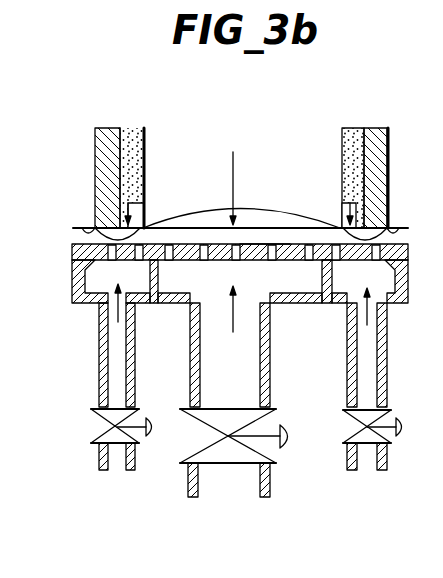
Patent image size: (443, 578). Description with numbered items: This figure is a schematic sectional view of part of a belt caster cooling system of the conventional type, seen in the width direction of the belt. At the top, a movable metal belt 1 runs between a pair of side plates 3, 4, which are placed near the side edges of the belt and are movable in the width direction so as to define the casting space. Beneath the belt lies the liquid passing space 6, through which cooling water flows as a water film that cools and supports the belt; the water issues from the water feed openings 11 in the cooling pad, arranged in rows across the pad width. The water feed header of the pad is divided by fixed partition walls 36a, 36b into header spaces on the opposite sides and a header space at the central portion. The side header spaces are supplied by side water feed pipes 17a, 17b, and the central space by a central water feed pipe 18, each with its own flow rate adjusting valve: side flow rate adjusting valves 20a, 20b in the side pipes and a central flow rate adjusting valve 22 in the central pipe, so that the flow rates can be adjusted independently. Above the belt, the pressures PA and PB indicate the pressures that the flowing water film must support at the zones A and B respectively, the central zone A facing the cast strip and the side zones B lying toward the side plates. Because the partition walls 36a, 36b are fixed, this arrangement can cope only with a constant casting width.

The metal belt 1 is at (393, 227).
The side plate 3 is at (371, 127).
The side plate 4 is at (107, 126).
The liquid passing space 6 is at (263, 237).
The water feed opening 11 is at (108, 257).
The side water feed pipe 17a is at (99, 372).
The side water feed pipe 17b is at (347, 372).
The central water feed pipe 18 is at (190, 372).
The side flow rate adjusting valve 20a is at (100, 432).
The side flow rate adjusting valve 20b is at (382, 437).
The central flow rate adjusting valve 22 is at (266, 452).
The fixed partition wall 36a is at (158, 275).
The fixed partition wall 36b is at (322, 275).
The zone A is at (187, 210).
The zone B is at (84, 230).
The pressure PA is at (230, 177).
The pressure PB is at (138, 224).